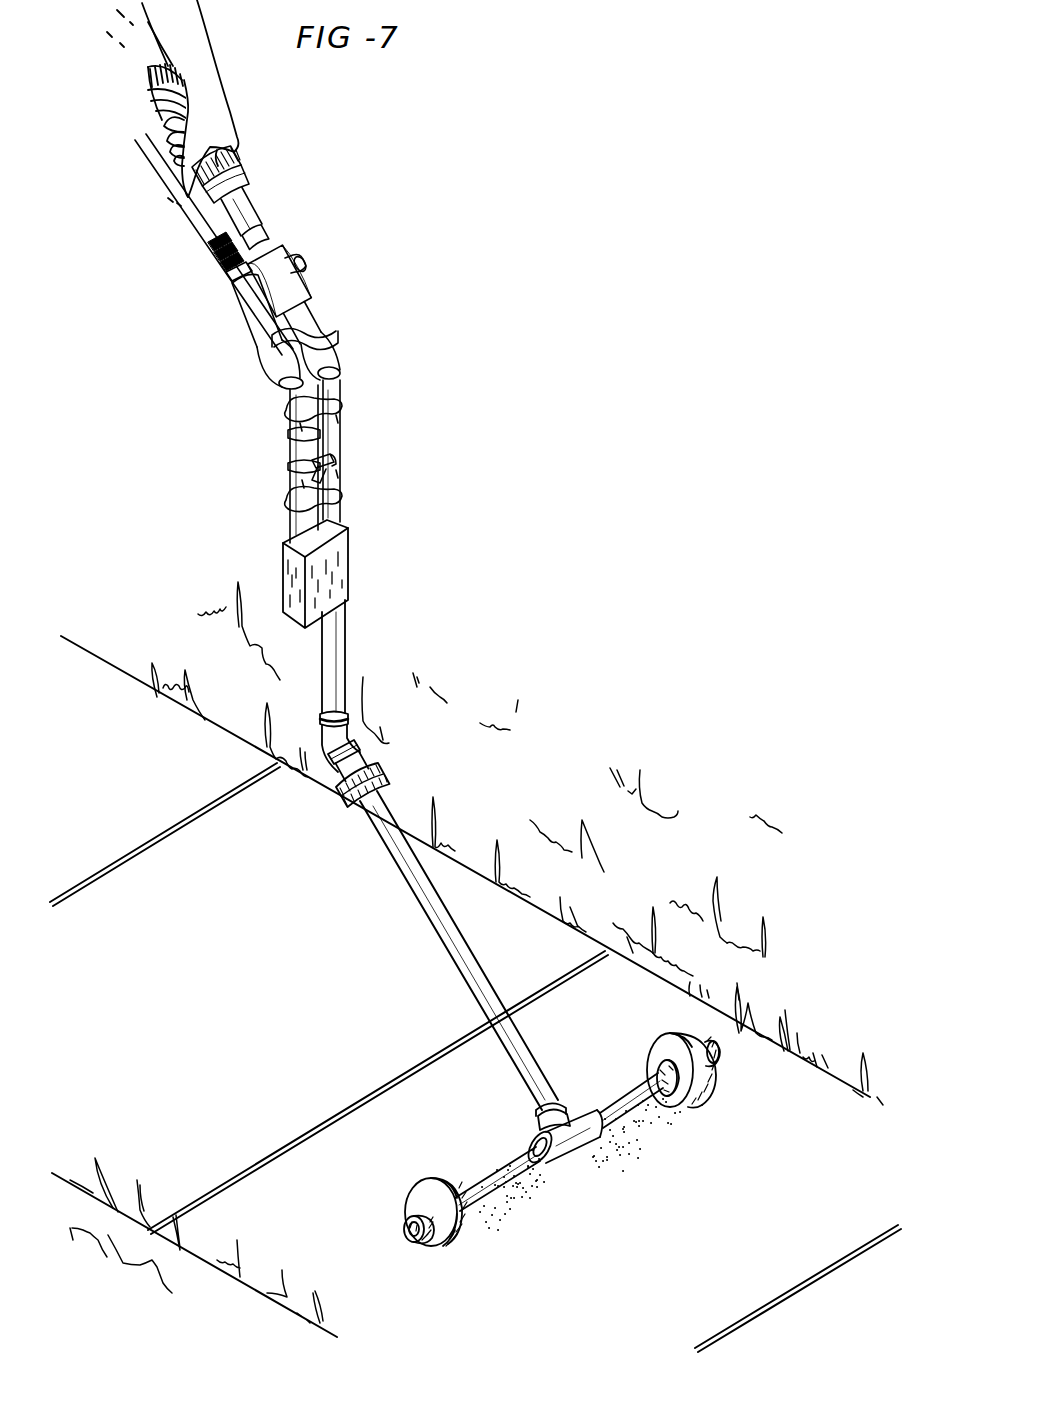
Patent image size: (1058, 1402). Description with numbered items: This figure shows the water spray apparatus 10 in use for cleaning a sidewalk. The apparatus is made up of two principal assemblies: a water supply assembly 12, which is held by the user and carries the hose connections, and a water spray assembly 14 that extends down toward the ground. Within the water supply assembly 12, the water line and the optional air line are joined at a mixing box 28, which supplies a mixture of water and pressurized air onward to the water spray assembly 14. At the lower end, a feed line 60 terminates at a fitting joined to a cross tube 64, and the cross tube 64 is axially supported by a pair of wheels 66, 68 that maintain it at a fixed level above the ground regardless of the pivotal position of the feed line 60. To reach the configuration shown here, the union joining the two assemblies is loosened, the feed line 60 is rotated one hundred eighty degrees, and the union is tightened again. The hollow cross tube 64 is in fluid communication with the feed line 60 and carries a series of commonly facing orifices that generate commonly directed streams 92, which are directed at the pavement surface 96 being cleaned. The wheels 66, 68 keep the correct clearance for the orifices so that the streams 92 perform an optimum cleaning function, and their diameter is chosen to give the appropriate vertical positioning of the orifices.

The water spray apparatus 10 is at (463, 713).
The water supply assembly 12 is at (330, 311).
The water spray assembly 14 is at (477, 955).
The mixing box 28 is at (351, 564).
The feed line 60 is at (528, 1047).
The cross tube 64 is at (488, 1168).
The wheel 66 is at (717, 1083).
The wheel 68 is at (472, 1240).
The streams 92 is at (537, 1203).
The concrete slab 96 is at (261, 1025).